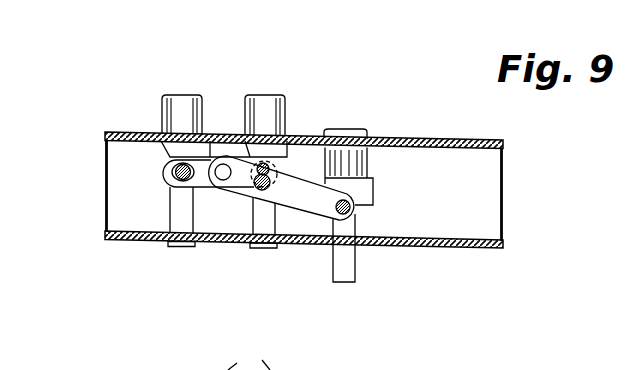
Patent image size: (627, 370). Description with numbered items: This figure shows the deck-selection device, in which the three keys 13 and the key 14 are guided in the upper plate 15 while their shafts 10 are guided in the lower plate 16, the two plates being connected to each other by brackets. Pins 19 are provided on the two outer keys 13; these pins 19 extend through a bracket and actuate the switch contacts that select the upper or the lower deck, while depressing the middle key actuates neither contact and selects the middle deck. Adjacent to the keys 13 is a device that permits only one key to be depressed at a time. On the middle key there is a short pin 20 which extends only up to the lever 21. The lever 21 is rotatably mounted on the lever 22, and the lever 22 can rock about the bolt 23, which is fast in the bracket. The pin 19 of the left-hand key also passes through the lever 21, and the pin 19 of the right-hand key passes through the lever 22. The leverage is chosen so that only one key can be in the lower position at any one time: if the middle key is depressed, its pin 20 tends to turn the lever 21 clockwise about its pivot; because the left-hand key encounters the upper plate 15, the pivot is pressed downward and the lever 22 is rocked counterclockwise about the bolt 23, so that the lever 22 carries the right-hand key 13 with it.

The shaft 10 is at (248, 237).
The keys 13 is at (268, 103).
The key 14 is at (249, 358).
The plate 15 is at (468, 137).
The plate 16 is at (457, 247).
The pins 19 is at (173, 170).
The short pin 20 is at (288, 133).
The lever 21 is at (196, 170).
The lever 22 is at (308, 197).
The bolt 23 is at (267, 190).